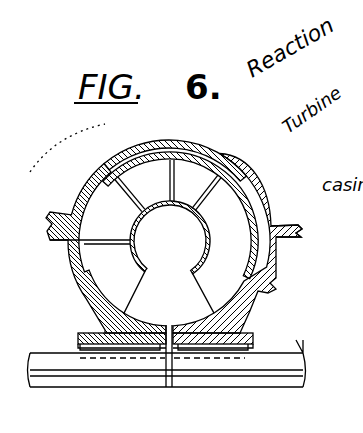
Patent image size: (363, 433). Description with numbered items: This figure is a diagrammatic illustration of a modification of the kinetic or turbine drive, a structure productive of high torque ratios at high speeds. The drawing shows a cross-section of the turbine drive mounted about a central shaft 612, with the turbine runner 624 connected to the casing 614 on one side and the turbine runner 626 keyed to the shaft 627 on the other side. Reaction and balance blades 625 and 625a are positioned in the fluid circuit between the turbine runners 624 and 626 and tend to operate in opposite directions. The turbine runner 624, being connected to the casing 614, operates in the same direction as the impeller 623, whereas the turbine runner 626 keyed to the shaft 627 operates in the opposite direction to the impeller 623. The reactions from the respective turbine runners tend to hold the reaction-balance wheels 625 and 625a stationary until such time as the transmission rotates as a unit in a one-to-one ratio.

The shaft 612 is at (36, 354).
The casing 614 is at (293, 228).
The impeller 623 is at (100, 283).
The turbine runner 624 is at (100, 208).
The reaction and balance blades 625 is at (149, 162).
The reaction and balance blades 625a is at (212, 154).
The turbine runner 626 is at (233, 203).
The shaft 627 is at (293, 353).